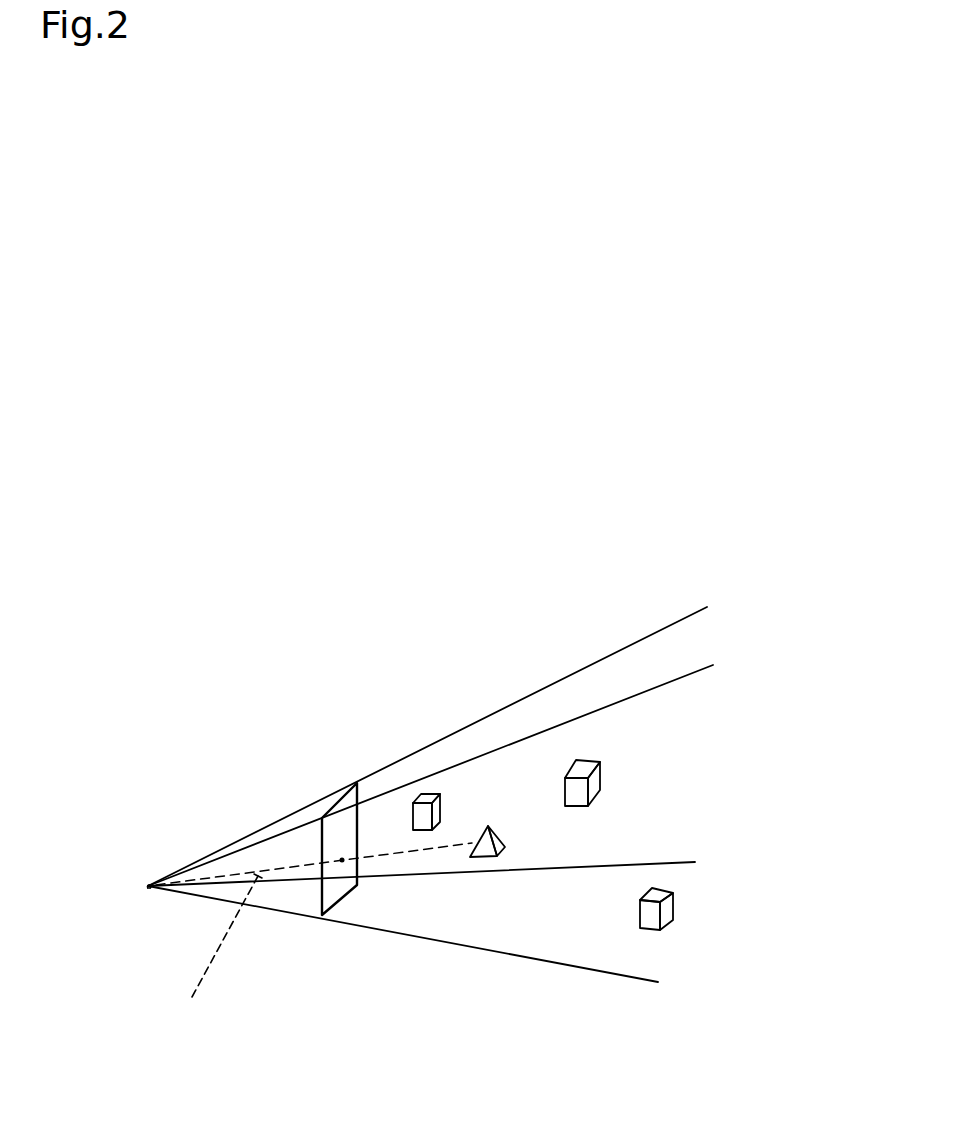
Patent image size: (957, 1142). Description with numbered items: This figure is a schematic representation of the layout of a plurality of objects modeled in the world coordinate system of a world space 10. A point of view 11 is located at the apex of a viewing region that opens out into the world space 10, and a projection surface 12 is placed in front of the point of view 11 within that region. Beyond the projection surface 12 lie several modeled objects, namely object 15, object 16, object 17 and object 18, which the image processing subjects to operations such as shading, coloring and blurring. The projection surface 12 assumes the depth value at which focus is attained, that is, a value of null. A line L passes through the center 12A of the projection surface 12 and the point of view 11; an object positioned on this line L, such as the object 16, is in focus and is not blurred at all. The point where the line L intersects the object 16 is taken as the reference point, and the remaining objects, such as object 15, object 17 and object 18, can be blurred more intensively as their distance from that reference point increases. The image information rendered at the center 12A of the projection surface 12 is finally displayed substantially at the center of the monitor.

The world space 10 is at (490, 641).
The point of view 11 is at (148, 888).
The line L is at (221, 958).
The projection surface 12 is at (342, 902).
The center of the projection surface 12A is at (345, 872).
The object 15 is at (425, 797).
The object 16 is at (488, 860).
The object 17 is at (598, 778).
The object 18 is at (670, 915).